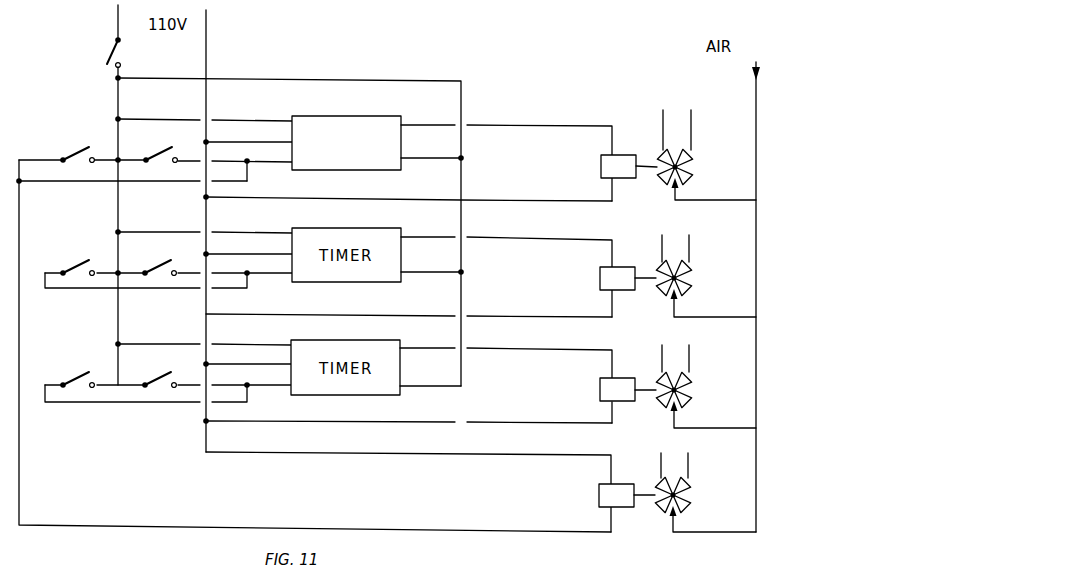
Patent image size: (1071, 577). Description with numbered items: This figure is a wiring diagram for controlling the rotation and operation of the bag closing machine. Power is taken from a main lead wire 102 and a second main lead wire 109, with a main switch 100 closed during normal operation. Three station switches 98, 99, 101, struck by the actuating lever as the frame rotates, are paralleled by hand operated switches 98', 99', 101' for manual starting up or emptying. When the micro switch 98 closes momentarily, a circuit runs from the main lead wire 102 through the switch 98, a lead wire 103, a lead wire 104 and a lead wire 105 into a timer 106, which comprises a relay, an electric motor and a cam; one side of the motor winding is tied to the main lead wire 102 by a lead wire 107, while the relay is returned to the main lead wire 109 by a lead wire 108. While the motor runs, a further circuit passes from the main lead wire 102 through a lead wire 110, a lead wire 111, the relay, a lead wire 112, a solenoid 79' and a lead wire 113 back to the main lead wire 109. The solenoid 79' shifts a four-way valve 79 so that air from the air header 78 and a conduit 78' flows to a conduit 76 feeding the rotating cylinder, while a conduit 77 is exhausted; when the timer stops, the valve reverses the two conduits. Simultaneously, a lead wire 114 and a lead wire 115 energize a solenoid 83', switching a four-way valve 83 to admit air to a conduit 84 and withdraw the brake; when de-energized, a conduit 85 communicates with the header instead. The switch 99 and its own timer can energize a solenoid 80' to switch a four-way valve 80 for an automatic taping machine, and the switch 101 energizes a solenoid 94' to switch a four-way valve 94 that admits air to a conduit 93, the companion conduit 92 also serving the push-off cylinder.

The main switch 100 is at (110, 50).
The main lead wire 102 is at (118, 100).
The lead wire 103 is at (33, 159).
The lead wire 104 is at (86, 184).
The lead wire 105 is at (270, 161).
The timer 106 is at (351, 116).
The lead wire 107 is at (233, 121).
The lead wire 108 is at (233, 143).
The main lead wire 109 is at (207, 36).
The lead wire 110 is at (462, 138).
The lead wire 111 is at (442, 160).
The lead wire 112 is at (520, 126).
The lead wire 113 is at (514, 200).
The lead wire 114 is at (20, 444).
The lead wire 115 is at (205, 444).
The switch 98 is at (75, 141).
The hand operated switch 98' is at (136, 142).
The switch 99 is at (69, 255).
The hand operated switch 99' is at (136, 255).
The switch 101 is at (68, 368).
The hand operated switch 101' is at (136, 368).
The fluid conduit 76 is at (663, 118).
The fluid conduit 77 is at (691, 118).
The air manifold 78 is at (740, 297).
The conduit 78' is at (696, 199).
The solenoid actuated four-way valve 79 is at (697, 168).
The solenoid 79' is at (606, 164).
The four-way valve 80 is at (689, 279).
The solenoid 80' is at (604, 278).
The conduit 92 is at (662, 366).
The conduit 93 is at (689, 366).
The solenoid actuated four-way valve 94 is at (690, 391).
The solenoid 94' is at (606, 389).
The solenoid actuated valve 83 is at (688, 496).
The solenoid 83' is at (602, 495).
The conduit 84 is at (688, 472).
The conduit 85 is at (661, 472).